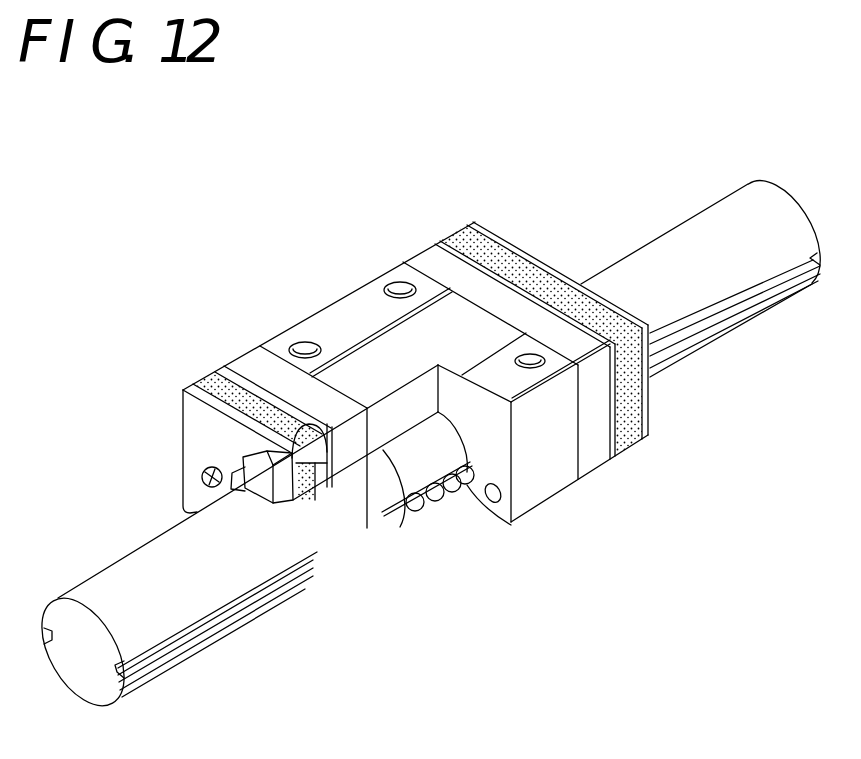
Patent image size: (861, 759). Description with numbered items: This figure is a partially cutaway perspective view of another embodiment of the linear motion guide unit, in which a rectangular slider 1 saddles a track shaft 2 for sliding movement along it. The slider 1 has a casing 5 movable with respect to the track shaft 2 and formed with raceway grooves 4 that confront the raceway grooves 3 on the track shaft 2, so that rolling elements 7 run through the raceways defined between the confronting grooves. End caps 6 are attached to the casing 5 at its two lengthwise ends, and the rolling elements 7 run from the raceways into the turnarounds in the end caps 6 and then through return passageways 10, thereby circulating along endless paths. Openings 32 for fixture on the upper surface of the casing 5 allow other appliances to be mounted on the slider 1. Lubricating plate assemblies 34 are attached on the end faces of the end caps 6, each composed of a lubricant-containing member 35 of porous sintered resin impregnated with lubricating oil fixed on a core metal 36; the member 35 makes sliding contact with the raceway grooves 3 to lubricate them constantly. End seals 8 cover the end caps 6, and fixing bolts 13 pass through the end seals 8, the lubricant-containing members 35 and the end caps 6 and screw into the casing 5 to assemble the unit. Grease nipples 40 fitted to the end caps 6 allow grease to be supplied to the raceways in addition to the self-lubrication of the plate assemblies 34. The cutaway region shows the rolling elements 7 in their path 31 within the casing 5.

The slider 1 is at (392, 240).
The track shaft 2 is at (137, 573).
The raceway grooves 3 is at (43, 628).
The raceway grooves 4 is at (452, 500).
The casing 5 is at (500, 443).
The end caps 6 is at (350, 447).
The rolling elements 7 is at (437, 497).
The end seals 8 is at (193, 398).
The return passageways 10 is at (490, 503).
The fixing bolts 13 is at (200, 476).
The ball return path 31 is at (401, 528).
The openings for fixture 32 is at (396, 280).
The lubricating plate assemblies 34 is at (237, 322).
The lubricant-containing member 35 is at (230, 393).
The core metal 36 is at (248, 380).
The grease nipples 40 is at (283, 500).